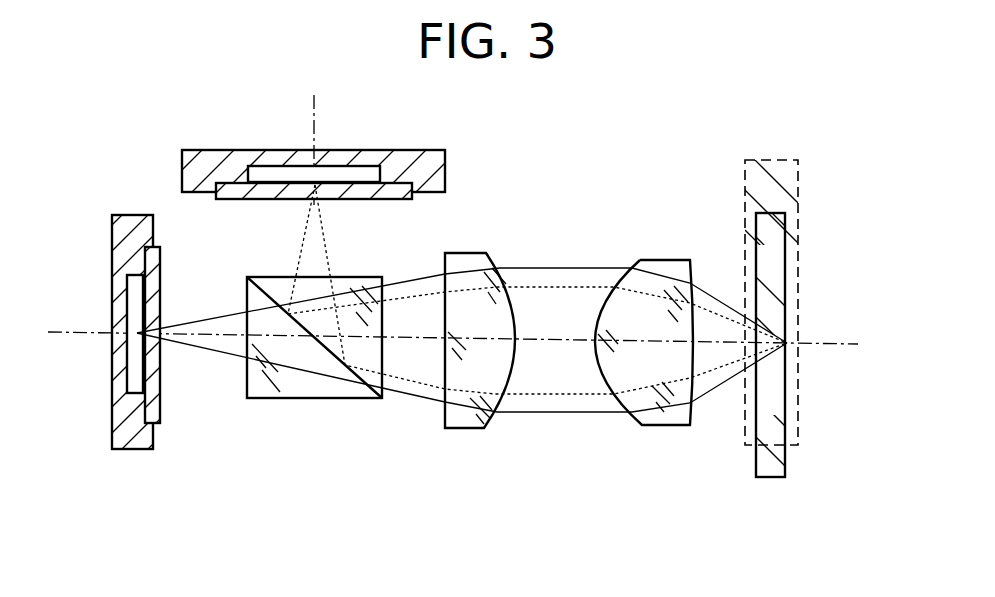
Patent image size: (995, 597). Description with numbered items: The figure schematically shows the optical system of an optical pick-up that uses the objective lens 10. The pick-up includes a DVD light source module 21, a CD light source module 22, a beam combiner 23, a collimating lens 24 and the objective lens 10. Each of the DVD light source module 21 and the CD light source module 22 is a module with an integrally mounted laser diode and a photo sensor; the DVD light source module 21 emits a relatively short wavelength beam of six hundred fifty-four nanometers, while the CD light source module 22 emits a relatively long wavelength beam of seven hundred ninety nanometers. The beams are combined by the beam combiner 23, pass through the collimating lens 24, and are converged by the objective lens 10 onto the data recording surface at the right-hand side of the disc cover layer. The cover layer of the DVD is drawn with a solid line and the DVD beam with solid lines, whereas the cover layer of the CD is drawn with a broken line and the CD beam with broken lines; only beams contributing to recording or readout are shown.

The objective lens 10 is at (655, 418).
The DVD light source module 21 is at (132, 435).
The CD light source module 22 is at (428, 173).
The beam combiner 23 is at (322, 388).
The collimating lens 24 is at (470, 418).
The element CD is at (745, 202).
The element DVD is at (775, 407).